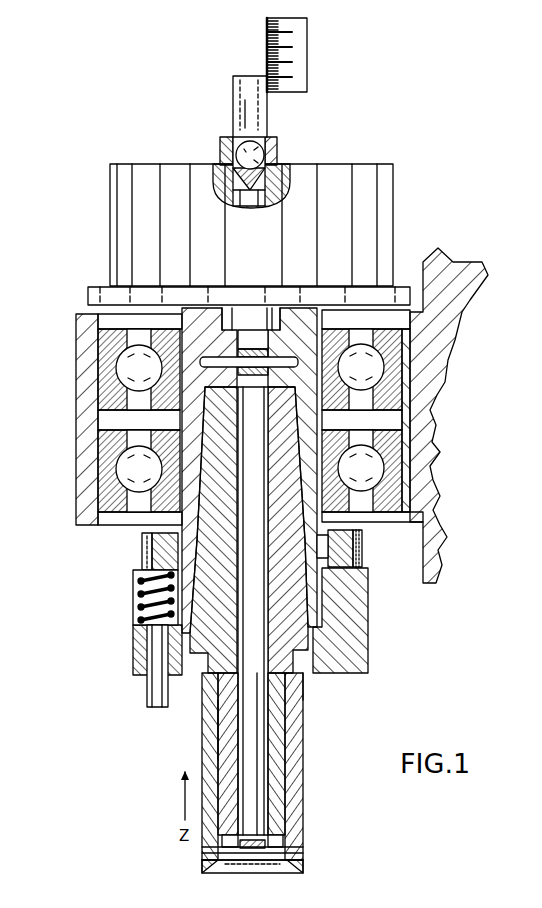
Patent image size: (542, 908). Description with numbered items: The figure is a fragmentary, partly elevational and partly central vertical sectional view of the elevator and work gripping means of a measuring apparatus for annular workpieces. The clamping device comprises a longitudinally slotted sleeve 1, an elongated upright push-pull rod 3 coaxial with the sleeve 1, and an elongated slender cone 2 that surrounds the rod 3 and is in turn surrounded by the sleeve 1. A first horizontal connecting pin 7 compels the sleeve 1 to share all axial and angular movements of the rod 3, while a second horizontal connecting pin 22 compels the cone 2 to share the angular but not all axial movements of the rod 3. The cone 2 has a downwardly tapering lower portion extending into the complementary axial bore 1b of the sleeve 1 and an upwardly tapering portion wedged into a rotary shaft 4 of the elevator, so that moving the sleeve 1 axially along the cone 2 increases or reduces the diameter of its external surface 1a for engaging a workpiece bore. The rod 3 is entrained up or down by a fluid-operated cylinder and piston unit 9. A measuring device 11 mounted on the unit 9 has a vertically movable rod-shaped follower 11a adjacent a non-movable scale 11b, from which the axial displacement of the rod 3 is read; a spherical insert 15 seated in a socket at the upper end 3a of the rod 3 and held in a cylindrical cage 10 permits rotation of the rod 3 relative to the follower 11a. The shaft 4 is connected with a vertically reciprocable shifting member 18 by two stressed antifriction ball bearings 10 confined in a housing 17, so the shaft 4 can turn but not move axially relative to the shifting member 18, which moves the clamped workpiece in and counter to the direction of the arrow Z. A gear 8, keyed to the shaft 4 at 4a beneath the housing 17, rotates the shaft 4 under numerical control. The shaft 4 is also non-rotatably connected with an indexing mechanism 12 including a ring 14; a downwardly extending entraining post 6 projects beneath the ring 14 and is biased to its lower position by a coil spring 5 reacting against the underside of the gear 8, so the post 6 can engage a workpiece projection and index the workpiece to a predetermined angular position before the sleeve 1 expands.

The longitudinally slotted sleeve 1 is at (300, 803).
The external surface 1a is at (303, 707).
The axial bore 1b is at (230, 722).
The cone 2 is at (278, 752).
The push-pull rod 3 is at (247, 345).
The upper end of rod 3a is at (262, 199).
The rotary shaft 4 is at (150, 512).
The key connection 4a is at (322, 549).
The coil spring 5 is at (133, 594).
The entraining post 6 is at (150, 700).
The first connecting pin 7 is at (232, 854).
The gear 8 is at (352, 551).
The cylinder and piston unit 9 is at (348, 217).
The antifriction ball bearings 10 is at (108, 448).
The measuring device 11 is at (230, 93).
The rod-shaped follower 11a is at (250, 113).
The scale 11b is at (301, 48).
The indexing mechanism 12 is at (138, 667).
The indexing ring 14 is at (364, 649).
The spherical insert 15 is at (240, 155).
The housing 17 is at (182, 517).
The shifting member 18 is at (445, 337).
The second connecting pin 22 is at (298, 390).